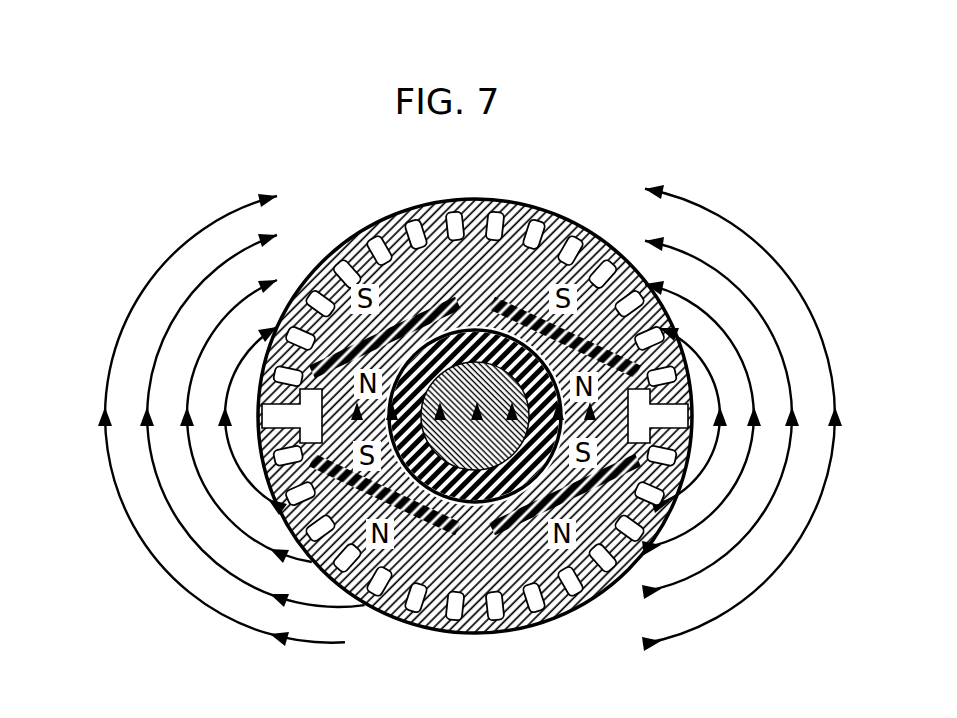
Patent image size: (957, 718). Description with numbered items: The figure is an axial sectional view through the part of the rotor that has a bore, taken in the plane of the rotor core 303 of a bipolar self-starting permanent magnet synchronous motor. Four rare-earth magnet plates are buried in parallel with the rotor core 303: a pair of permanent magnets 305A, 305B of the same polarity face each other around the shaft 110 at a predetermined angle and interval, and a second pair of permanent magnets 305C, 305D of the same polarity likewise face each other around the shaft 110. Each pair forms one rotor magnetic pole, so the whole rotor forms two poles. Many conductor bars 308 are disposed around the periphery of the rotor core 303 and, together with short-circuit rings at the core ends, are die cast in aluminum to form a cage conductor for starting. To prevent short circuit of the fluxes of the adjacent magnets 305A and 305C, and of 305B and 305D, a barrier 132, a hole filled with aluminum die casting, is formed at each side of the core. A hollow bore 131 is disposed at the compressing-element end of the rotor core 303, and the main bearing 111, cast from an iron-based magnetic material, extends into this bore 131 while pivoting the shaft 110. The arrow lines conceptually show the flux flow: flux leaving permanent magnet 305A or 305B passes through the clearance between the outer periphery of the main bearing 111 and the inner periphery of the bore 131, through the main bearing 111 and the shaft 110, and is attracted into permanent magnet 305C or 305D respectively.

The shaft 110 is at (447, 535).
The main bearing 111 is at (468, 312).
The bore 131 is at (472, 505).
The barrier 132 is at (275, 416).
The rotor core 303 is at (469, 214).
The permanent magnet 305A is at (443, 303).
The permanent magnet 305B is at (497, 300).
The permanent magnet 305C is at (410, 513).
The permanent magnet 305D is at (515, 517).
The conductor bar 308 is at (493, 610).